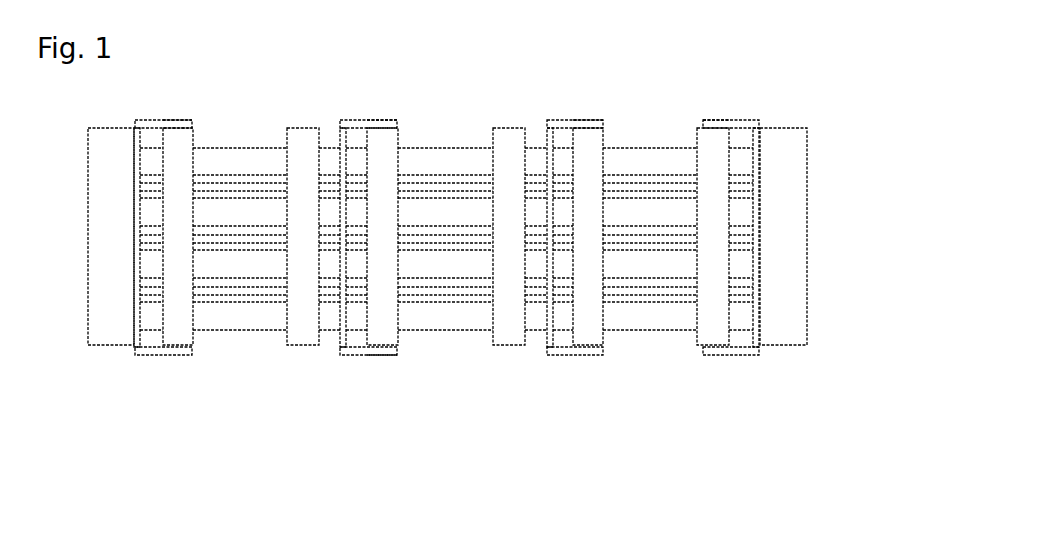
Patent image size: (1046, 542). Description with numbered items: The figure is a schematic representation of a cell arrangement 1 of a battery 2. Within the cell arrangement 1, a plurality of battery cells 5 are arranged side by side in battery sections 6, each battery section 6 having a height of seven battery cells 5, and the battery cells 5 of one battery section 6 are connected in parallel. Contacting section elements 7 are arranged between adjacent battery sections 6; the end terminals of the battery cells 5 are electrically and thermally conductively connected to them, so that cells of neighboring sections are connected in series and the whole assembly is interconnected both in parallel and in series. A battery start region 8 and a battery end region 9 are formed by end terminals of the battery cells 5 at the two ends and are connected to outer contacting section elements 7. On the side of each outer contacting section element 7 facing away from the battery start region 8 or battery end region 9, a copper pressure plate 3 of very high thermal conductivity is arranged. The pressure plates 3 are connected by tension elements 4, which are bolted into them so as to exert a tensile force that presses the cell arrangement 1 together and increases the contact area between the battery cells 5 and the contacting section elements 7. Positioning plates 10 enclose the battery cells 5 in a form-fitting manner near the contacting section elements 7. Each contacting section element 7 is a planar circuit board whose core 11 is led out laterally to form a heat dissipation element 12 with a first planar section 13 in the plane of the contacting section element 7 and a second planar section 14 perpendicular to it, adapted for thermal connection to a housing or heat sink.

The cell arrangement 1 is at (421, 136).
The battery 2 is at (794, 115).
The pressure plate 3 is at (107, 232).
The tension element 4 is at (250, 183).
The battery cell 5 is at (645, 207).
The battery section 6 is at (236, 131).
The contacting section element 7 is at (342, 158).
The battery start region 8 is at (124, 263).
The battery end region 9 is at (791, 288).
The positioning plate 10 is at (173, 150).
The core 11 is at (150, 120).
The heat dissipation element 12 is at (178, 120).
The first planar section 13 is at (343, 355).
The second planar section 14 is at (365, 353).